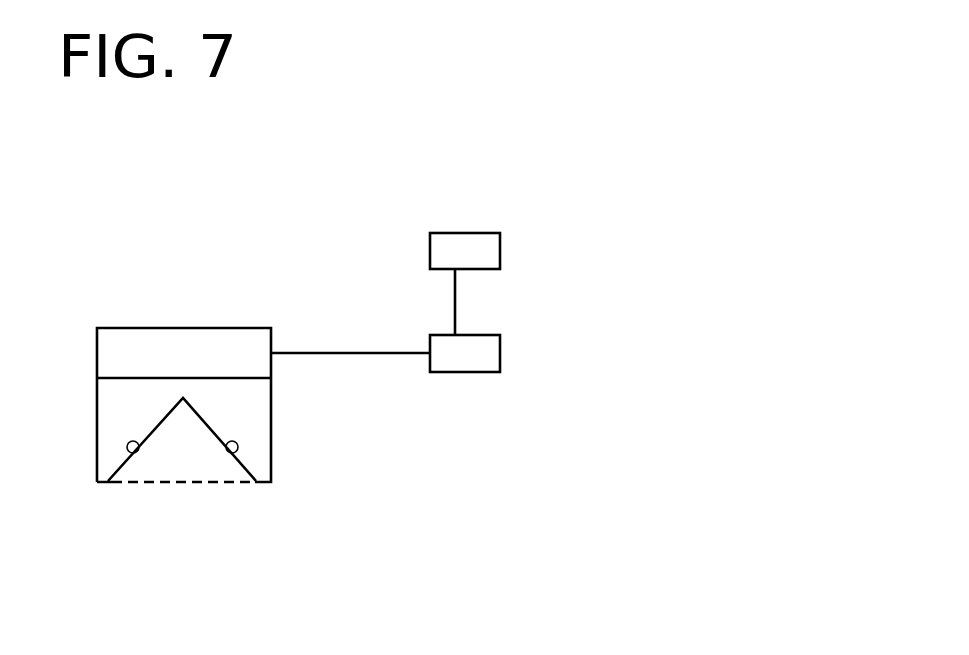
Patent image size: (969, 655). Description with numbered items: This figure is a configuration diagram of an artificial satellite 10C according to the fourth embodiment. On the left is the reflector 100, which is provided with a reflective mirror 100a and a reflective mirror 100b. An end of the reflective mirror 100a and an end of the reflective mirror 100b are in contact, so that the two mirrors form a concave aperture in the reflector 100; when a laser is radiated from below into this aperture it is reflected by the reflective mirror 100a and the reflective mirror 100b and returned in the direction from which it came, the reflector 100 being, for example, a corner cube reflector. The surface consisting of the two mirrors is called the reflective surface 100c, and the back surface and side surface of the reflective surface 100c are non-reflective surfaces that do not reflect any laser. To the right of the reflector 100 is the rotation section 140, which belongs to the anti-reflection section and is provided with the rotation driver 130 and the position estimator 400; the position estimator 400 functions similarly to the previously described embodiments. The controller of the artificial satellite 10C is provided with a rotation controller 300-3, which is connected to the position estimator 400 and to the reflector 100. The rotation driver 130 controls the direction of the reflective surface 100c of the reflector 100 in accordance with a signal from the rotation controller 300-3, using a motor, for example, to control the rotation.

The artificial satellite 10C is at (384, 189).
The reflector 100 is at (103, 390).
The reflective mirror 100a is at (127, 448).
The reflective mirror 100b is at (238, 448).
The reflective surface 100c is at (228, 537).
The rotation driver 130 is at (271, 342).
The rotation section 140 is at (817, 175).
The position estimator 400 is at (500, 251).
The rotation controller 300-3 is at (500, 353).